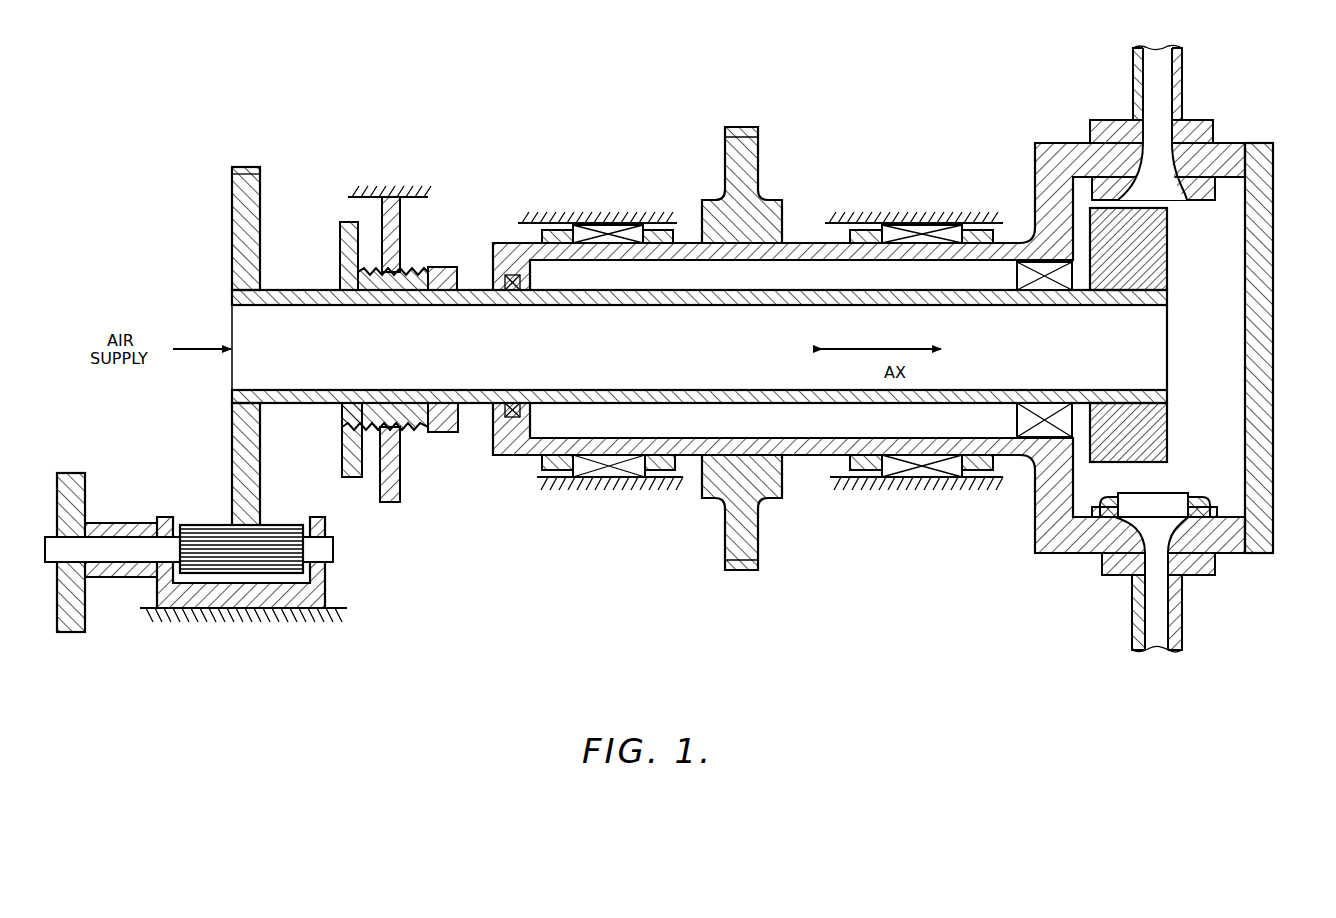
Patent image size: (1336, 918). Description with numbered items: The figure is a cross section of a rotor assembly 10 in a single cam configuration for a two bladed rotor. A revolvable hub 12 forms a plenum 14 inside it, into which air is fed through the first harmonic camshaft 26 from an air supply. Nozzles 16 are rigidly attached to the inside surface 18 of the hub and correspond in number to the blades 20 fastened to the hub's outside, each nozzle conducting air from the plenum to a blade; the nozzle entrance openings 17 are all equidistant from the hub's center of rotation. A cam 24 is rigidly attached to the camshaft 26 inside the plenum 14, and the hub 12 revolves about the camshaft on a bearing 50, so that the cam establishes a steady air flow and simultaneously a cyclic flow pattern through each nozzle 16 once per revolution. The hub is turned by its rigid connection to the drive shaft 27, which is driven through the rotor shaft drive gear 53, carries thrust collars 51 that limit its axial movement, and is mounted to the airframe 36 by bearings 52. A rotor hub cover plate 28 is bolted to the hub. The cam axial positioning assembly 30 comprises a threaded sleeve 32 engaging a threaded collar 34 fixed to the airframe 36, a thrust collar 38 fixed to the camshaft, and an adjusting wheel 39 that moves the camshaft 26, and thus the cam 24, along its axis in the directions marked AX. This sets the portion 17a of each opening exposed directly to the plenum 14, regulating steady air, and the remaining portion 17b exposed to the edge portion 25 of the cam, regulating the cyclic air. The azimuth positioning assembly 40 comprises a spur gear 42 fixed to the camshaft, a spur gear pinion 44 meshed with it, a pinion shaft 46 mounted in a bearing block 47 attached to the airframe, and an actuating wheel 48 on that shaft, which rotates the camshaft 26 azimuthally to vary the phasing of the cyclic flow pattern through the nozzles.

The rotor assembly 10 is at (850, 142).
The revolvable hub 12 is at (1030, 147).
The plenum 14 is at (1219, 362).
The nozzle 16 is at (1203, 498).
The nozzle entrance opening 17 is at (1135, 490).
The portion of nozzle entrance opening 17a is at (1177, 183).
The remaining portion of nozzle opening 17b is at (1145, 187).
The inside surface 18 is at (1233, 517).
The blade 20 is at (1134, 77).
The cam 24 is at (1165, 253).
The edge portion 25 is at (1160, 463).
The first harmonic camshaft 26 is at (249, 392).
The drive shaft 27 is at (500, 457).
The rotor hub cover plate 28 is at (1274, 255).
The cam axial positioning assembly 30 is at (487, 157).
The threaded sleeve 32 is at (404, 271).
The threaded collar 34 is at (402, 216).
The airframe 36 is at (424, 198).
The thrust collar 38 is at (446, 268).
The adjusting wheel 39 is at (340, 248).
The azimuth positioning assembly 40 is at (190, 480).
The spur gear 42 is at (260, 465).
The spur gear pinion 44 is at (290, 525).
The pinion shaft 46 is at (333, 546).
The bearing block 47 is at (325, 590).
The actuating wheel 48 is at (88, 492).
The bearing 50 is at (1016, 277).
The thrust collar 51 is at (521, 229).
The bearing 52 is at (610, 235).
The rotor shaft drive gear 53 is at (760, 175).